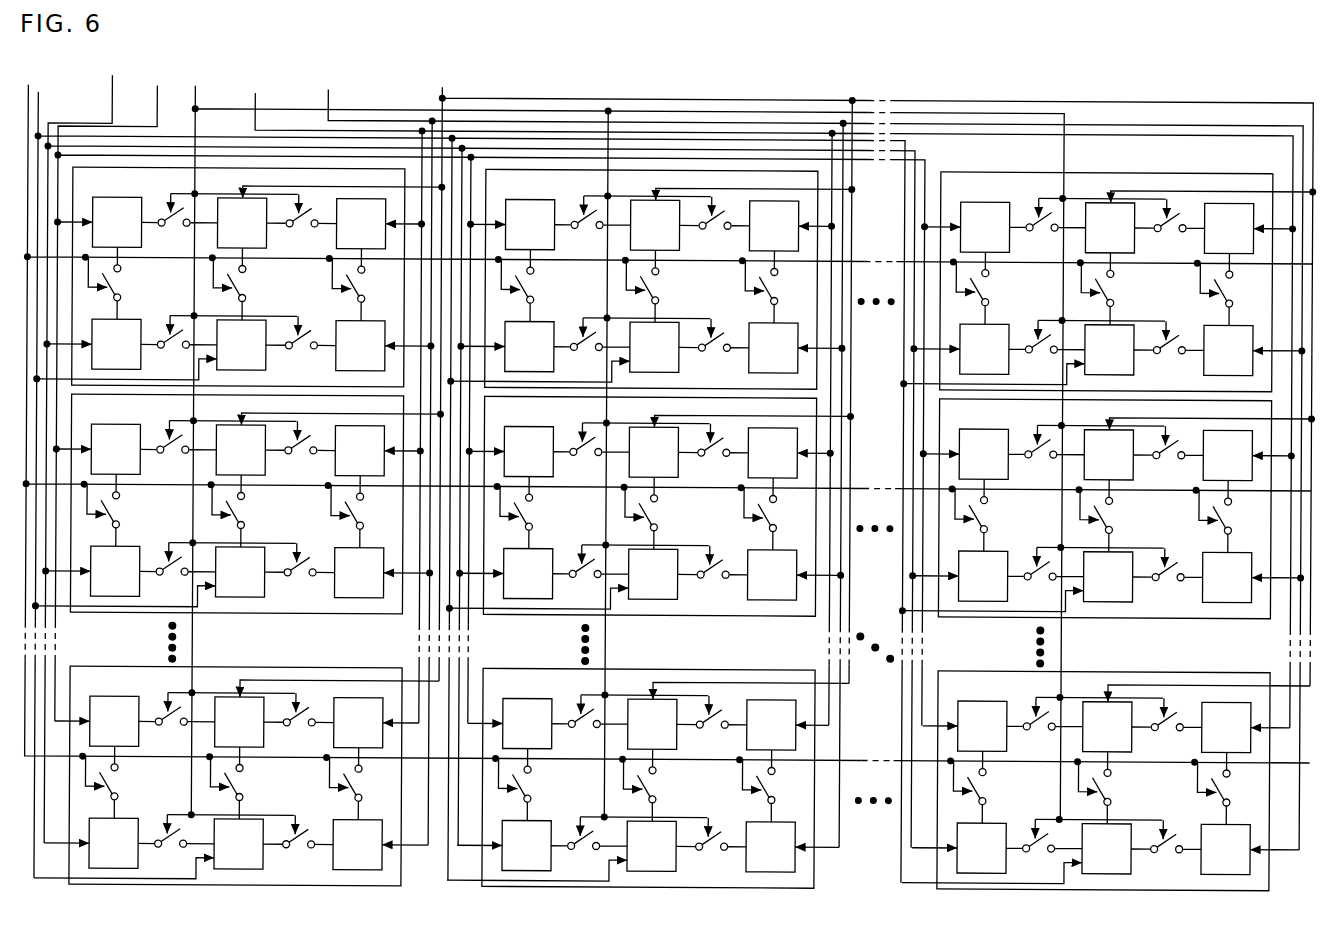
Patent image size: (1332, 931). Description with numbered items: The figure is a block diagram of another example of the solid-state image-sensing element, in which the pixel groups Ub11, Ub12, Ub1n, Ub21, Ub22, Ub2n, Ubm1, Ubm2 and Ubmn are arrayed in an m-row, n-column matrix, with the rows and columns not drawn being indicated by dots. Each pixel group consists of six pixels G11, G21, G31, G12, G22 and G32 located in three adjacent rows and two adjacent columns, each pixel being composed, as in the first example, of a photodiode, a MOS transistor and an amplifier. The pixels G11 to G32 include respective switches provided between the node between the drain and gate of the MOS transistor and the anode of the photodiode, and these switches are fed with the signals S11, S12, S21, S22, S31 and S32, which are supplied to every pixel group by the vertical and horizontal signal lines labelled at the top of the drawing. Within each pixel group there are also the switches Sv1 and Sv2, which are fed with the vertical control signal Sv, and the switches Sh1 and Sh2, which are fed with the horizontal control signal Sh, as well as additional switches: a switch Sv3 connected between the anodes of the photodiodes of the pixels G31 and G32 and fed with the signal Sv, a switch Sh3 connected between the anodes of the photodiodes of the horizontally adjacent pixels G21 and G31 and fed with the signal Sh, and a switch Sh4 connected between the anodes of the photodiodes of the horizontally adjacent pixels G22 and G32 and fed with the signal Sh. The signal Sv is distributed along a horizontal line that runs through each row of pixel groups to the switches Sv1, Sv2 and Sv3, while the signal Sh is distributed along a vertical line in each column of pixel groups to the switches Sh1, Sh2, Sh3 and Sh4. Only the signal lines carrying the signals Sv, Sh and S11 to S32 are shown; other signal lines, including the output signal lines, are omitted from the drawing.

The signal φ Sv is at (662, 412).
The signal φ S11 is at (490, 393).
The signal φ S12 is at (480, 448).
The signal φ S21 is at (778, 384).
The signal φ S22 is at (469, 482).
The signal φ S31 is at (769, 396).
The signal φ S32 is at (807, 455).
The signal φ Sh is at (624, 440).
The pixel group Ub11 is at (238, 277).
The pixel group Ub12 is at (236, 504).
The pixel group Ub1n is at (235, 776).
The pixel group Ub21 is at (651, 279).
The pixel group Ub22 is at (649, 506).
The pixel group Ub2n is at (648, 778).
The pixel group Ubm1 is at (1106, 282).
The pixel group Ubm2 is at (1104, 509).
The pixel group Ubmn is at (1103, 781).
The pixel G11 is at (550, 474).
The pixel G12 is at (549, 596).
The pixel G21 is at (675, 475).
The pixel G22 is at (674, 597).
The pixel G31 is at (794, 476).
The pixel G32 is at (793, 598).
The switch Sh1 is at (602, 475).
The switch Sh2 is at (601, 597).
The switch Sh3 is at (731, 476).
The switch Sh4 is at (730, 598).
The switch Sv1 is at (556, 535).
The switch Sv2 is at (681, 536).
The switch Sv3 is at (800, 537).